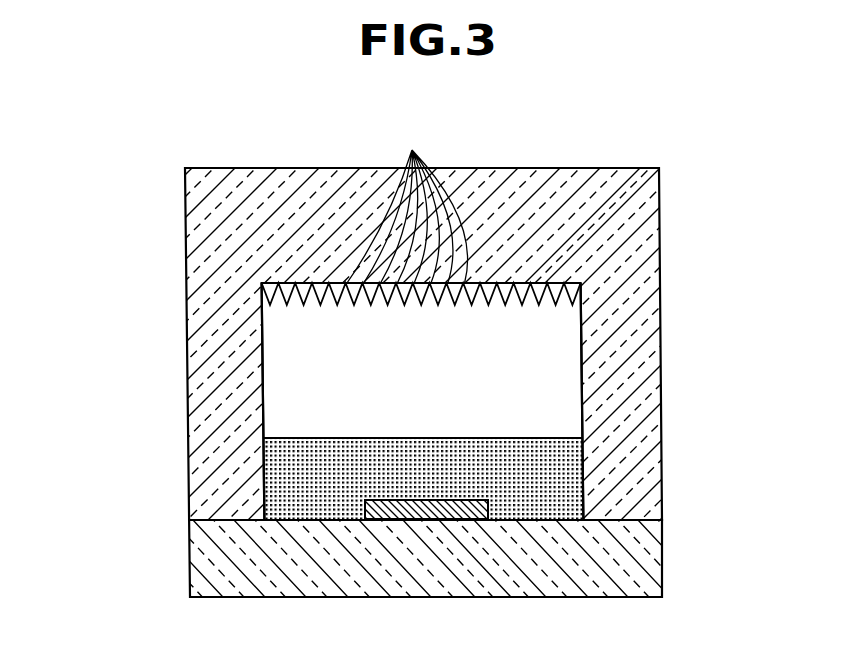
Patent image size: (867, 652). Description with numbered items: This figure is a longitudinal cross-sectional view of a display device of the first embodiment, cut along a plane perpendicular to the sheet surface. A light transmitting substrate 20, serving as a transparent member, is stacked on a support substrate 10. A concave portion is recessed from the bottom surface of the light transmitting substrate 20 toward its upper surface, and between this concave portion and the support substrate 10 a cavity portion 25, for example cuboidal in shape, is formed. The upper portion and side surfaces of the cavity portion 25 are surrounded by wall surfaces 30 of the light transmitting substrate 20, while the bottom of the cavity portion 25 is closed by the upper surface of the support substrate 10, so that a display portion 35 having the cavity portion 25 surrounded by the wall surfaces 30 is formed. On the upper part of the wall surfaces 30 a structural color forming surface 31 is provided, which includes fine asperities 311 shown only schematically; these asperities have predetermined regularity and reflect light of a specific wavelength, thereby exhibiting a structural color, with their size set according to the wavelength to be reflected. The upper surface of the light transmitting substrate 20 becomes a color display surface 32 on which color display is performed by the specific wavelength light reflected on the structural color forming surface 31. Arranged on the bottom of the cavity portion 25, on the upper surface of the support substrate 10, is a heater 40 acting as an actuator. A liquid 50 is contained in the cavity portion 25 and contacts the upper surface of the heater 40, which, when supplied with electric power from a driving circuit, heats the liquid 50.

The support substrate 10 is at (663, 557).
The light transmitting substrate 20 is at (660, 228).
The cavity portion 25 is at (563, 410).
The wall surfaces 30 is at (585, 372).
The structural color forming surface 31 is at (581, 286).
The fine asperities 311 is at (407, 201).
The color display surface 32 is at (508, 165).
The display portion 35 is at (728, 170).
The heater 40 is at (428, 520).
The liquid 50 is at (585, 478).